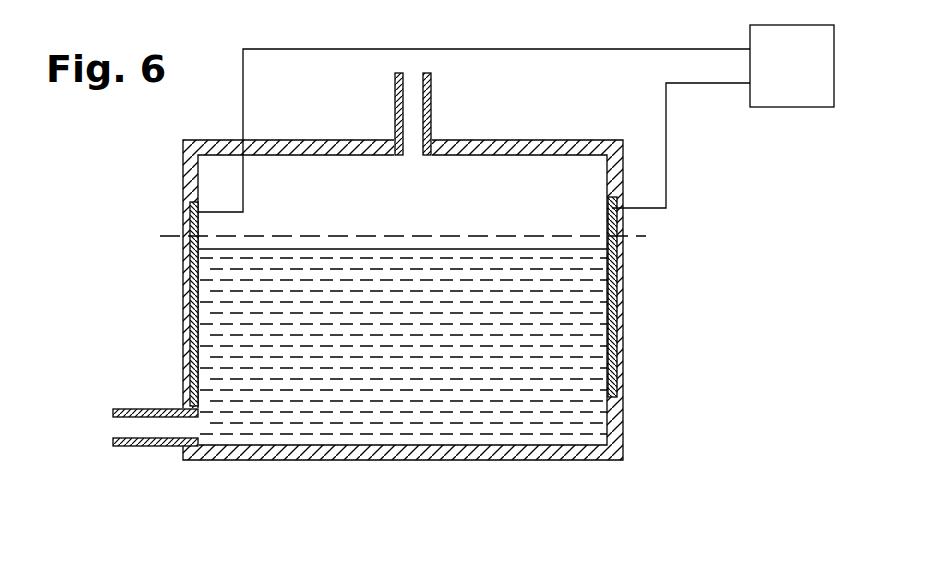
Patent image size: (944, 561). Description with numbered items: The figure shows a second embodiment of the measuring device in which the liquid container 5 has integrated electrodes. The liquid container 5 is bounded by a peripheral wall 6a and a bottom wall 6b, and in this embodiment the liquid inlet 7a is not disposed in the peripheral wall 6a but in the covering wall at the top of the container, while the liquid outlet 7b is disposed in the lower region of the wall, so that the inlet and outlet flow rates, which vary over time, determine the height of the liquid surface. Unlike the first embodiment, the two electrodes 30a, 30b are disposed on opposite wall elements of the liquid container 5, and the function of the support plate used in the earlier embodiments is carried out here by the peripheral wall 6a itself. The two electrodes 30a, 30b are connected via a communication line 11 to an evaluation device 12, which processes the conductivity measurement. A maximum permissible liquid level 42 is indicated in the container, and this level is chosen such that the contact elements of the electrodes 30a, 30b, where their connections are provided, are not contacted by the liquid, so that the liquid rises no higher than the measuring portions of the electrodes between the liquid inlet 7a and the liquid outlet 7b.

The liquid container 5 is at (446, 322).
The peripheral wall 6a is at (620, 353).
The bottom wall 6b is at (420, 449).
The liquid inlet 7a is at (433, 92).
The liquid outlet 7b is at (140, 407).
The communication line 11 is at (665, 49).
The evaluation device 12 is at (797, 107).
The electrode 30a is at (192, 312).
The electrode 30b is at (612, 306).
The maximum permissible liquid level 42 is at (168, 237).